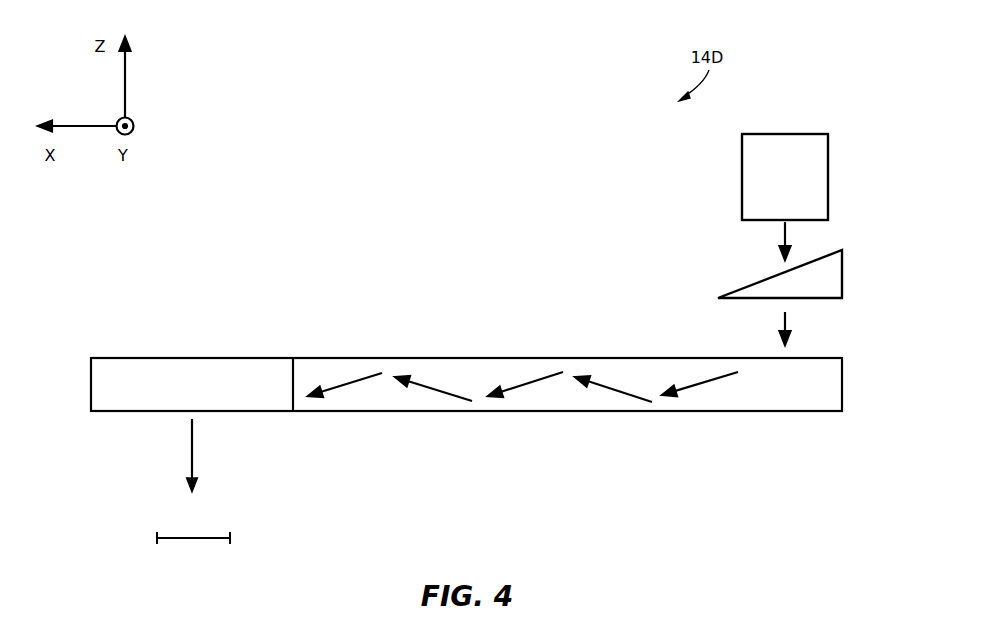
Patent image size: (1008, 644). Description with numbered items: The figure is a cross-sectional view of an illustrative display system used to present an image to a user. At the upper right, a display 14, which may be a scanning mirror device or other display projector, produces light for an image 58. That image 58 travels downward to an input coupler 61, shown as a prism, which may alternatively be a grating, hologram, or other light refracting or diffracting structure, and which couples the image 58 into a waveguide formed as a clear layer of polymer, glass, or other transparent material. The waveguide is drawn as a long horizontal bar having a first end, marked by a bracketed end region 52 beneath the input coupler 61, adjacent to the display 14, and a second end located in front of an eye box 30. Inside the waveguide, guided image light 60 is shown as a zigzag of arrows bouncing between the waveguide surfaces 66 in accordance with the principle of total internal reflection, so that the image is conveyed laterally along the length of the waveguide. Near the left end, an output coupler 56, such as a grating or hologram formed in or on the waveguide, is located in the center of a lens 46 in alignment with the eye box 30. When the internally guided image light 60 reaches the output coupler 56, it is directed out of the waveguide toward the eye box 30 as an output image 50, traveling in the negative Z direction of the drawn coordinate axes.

The display 14 is at (813, 175).
The eye box 30 is at (231, 538).
The lens 46 is at (335, 268).
The output image 50 is at (193, 445).
The input section of light guide 52 is at (715, 420).
The output coupler 56 is at (287, 337).
The image 58 is at (779, 239).
The guided image light 60 is at (707, 383).
The input coupler 61 is at (820, 283).
The waveguide surfaces 66 is at (503, 357).